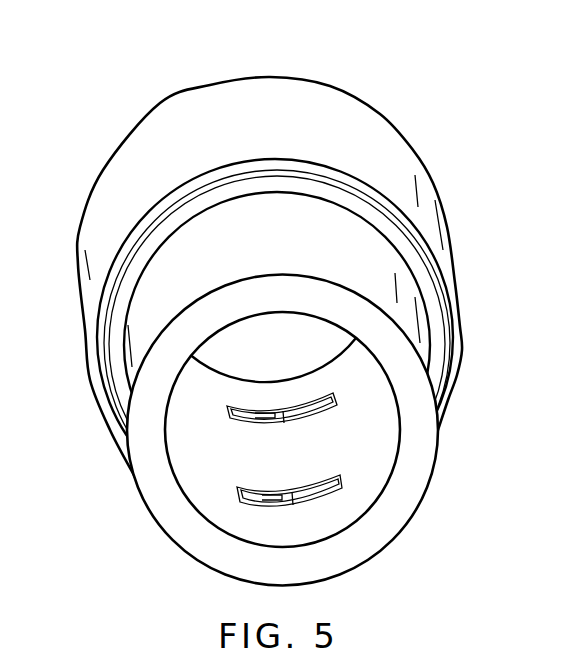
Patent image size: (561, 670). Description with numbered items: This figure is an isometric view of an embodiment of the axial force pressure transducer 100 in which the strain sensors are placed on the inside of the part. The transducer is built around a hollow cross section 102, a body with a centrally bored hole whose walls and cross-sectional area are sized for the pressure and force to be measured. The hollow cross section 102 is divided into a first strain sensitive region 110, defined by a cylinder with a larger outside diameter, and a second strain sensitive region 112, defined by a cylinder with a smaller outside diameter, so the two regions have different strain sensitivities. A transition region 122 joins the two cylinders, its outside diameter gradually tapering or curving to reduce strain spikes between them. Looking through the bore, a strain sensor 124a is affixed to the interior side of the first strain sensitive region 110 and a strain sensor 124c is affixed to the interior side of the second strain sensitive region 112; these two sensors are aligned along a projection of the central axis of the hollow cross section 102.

The axial force pressure transducer 100 is at (274, 296).
The hollow cross section 102 is at (189, 84).
The first strain sensitive region 110 is at (366, 106).
The second strain sensitive region 112 is at (120, 383).
The transition region 122 is at (458, 284).
The strain sensor 124a is at (272, 404).
The strain sensor 124c is at (226, 487).